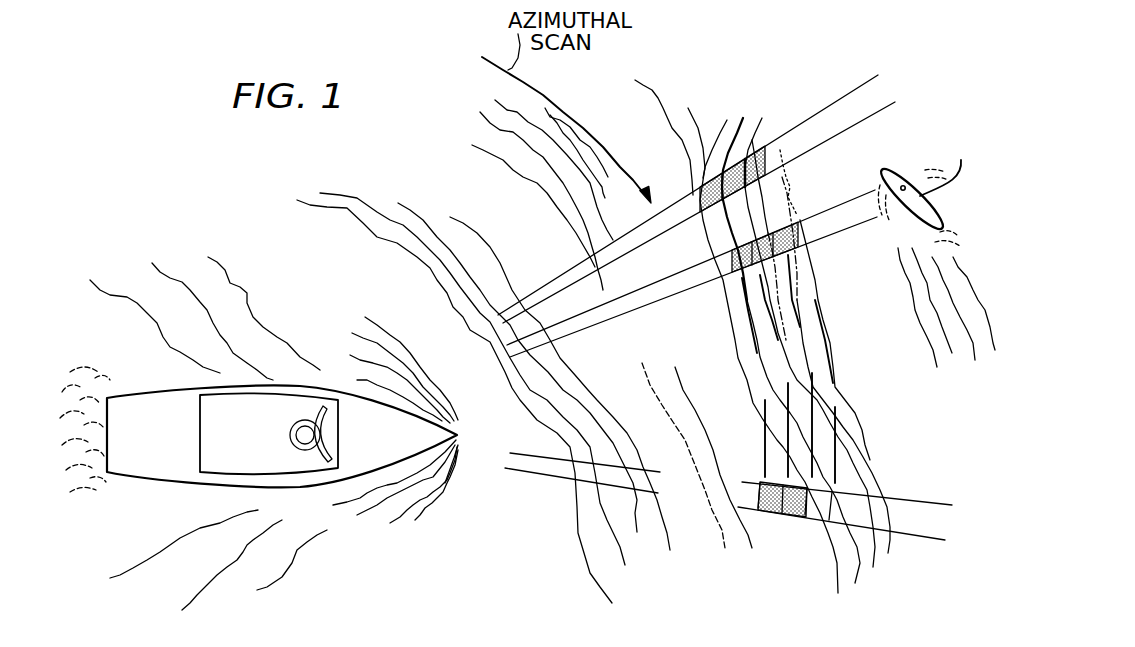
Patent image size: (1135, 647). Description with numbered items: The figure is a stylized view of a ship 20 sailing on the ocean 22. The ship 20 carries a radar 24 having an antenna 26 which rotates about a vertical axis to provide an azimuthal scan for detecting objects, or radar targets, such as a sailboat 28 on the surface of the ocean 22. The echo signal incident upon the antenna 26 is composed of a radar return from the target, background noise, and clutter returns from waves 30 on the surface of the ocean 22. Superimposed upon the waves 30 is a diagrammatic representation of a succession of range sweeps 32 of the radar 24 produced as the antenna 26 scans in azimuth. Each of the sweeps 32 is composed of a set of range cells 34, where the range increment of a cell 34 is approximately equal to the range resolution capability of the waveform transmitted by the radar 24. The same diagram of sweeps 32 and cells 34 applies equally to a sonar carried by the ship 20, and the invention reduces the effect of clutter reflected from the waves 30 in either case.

The ship 20 is at (313, 488).
The ocean 22 is at (739, 581).
The radar 24 is at (292, 434).
The antenna 26 is at (330, 448).
The sailboat 28 is at (932, 210).
The waves 30 is at (208, 257).
The range sweeps 32 is at (881, 88).
The range cells 34 is at (789, 332).